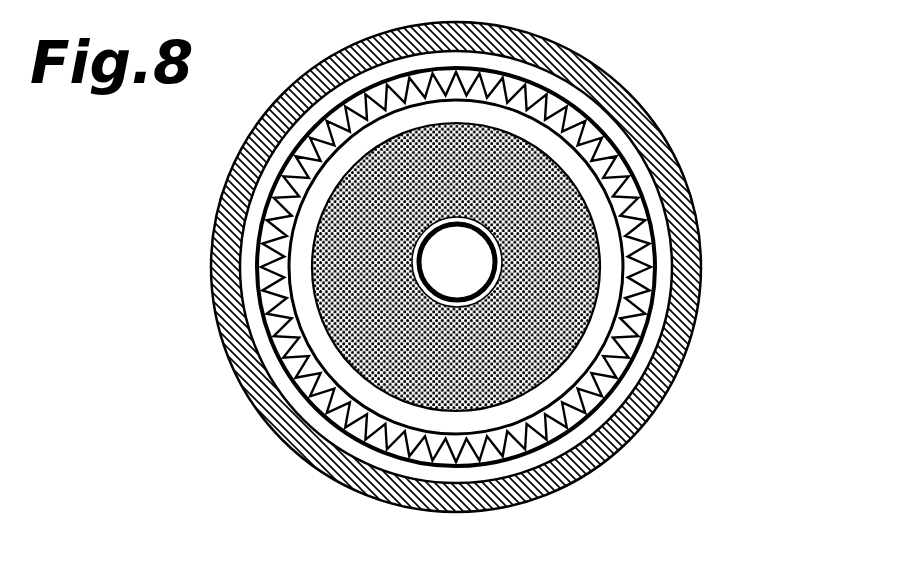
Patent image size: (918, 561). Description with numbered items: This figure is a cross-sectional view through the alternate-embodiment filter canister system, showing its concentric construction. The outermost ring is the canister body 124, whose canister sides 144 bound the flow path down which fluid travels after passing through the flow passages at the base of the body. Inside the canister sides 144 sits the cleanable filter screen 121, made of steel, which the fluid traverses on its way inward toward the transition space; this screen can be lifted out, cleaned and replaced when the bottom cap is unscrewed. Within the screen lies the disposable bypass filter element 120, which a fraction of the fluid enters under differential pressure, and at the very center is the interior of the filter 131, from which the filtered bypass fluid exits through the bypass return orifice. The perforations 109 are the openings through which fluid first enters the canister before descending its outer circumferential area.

The perforations 109 is at (503, 117).
The canister body 124 is at (618, 88).
The canister sides 144 is at (647, 182).
The cleanable filter screen 121 is at (657, 245).
The disposable bypass filter element 120 is at (555, 297).
The interior of the filter 131 is at (461, 267).